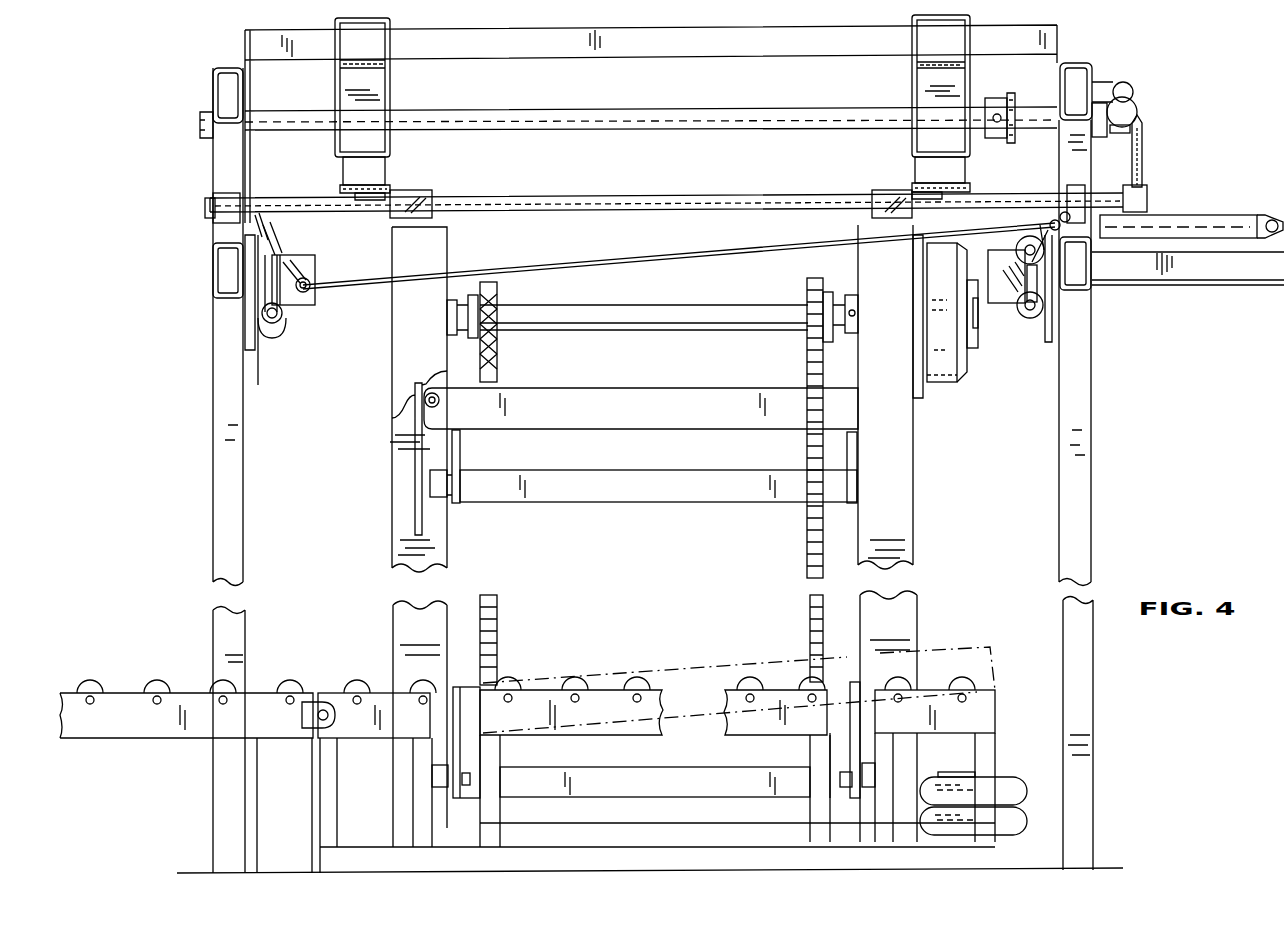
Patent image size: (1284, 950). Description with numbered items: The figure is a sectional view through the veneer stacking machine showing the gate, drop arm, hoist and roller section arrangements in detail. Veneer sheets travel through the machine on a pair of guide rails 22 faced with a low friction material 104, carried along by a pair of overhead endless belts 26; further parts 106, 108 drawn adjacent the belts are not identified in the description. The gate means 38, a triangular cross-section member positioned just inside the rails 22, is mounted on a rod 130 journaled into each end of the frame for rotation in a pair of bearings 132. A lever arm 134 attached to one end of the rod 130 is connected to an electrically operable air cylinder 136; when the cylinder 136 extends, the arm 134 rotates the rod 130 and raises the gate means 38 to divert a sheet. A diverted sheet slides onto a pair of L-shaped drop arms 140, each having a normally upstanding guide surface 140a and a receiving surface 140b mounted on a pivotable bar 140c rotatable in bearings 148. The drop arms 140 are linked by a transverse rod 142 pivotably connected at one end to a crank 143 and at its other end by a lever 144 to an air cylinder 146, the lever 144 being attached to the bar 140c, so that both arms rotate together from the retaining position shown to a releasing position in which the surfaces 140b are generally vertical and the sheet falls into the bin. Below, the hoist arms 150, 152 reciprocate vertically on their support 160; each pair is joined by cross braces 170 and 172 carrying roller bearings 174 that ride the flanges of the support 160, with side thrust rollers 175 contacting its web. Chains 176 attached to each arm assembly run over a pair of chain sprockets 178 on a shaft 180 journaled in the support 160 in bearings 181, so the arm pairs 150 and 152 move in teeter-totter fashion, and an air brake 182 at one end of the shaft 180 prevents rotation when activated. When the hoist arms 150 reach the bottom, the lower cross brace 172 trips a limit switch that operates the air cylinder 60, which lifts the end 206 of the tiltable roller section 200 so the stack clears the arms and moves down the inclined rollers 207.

The guide rails 22 is at (350, 189).
The overhead endless belts 26 is at (338, 75).
The gate means 38 is at (432, 192).
The air cylinder 60 is at (1015, 782).
The low friction material 104 is at (392, 190).
The box 106 is at (654, 170).
The column housing 108 is at (385, 83).
The rod 130 is at (605, 198).
The bearings 132 is at (215, 198).
The lever arm 134 is at (1143, 148).
The air cylinder 136 is at (1133, 104).
The drop arms 140 is at (315, 293).
The guide surface 140a is at (282, 232).
The receiving surface 140b is at (1028, 250).
The pivotable bar 140c is at (290, 305).
The transverse rod 142 is at (510, 268).
The crank 143 is at (310, 278).
The lever 144 is at (1058, 210).
The air cylinder 146 is at (1198, 215).
The bearings 148 is at (228, 258).
The hoist arms 150 is at (455, 690).
The hoist arms 152 is at (462, 462).
The support 160 is at (913, 530).
The cross brace 170 is at (685, 388).
The cross brace 172 is at (722, 502).
The roller bearings 174 is at (447, 497).
The side thrust rollers 175 is at (415, 405).
The chains 176 is at (807, 292).
The chain sprockets 178 is at (497, 340).
The shaft 180 is at (702, 303).
The bearings 181 is at (447, 308).
The air brake 182 is at (960, 380).
The tiltable roller section 200 is at (632, 658).
The end 206 is at (995, 694).
The inclined rollers 207 is at (572, 690).